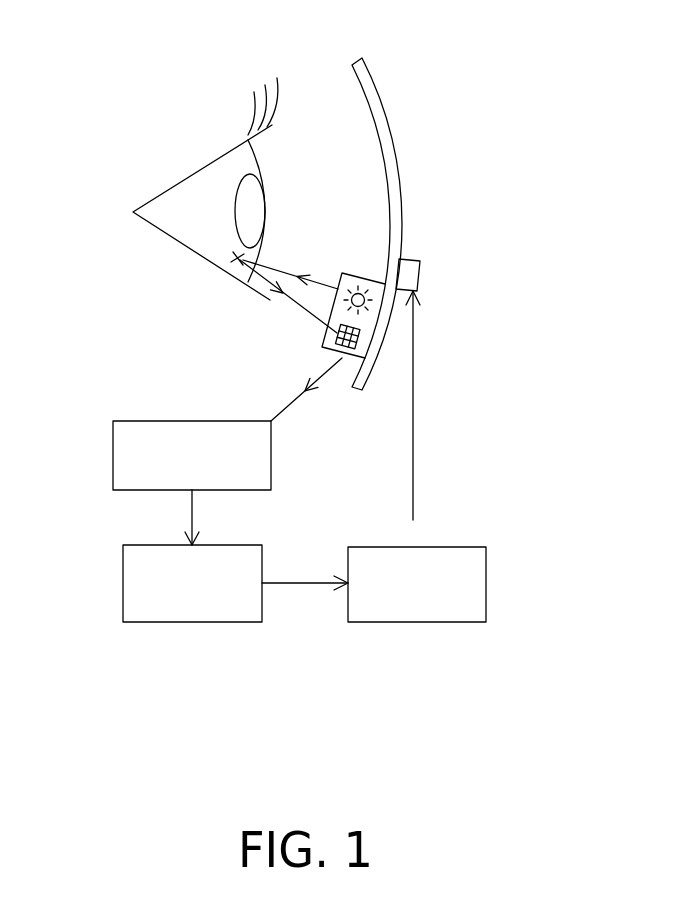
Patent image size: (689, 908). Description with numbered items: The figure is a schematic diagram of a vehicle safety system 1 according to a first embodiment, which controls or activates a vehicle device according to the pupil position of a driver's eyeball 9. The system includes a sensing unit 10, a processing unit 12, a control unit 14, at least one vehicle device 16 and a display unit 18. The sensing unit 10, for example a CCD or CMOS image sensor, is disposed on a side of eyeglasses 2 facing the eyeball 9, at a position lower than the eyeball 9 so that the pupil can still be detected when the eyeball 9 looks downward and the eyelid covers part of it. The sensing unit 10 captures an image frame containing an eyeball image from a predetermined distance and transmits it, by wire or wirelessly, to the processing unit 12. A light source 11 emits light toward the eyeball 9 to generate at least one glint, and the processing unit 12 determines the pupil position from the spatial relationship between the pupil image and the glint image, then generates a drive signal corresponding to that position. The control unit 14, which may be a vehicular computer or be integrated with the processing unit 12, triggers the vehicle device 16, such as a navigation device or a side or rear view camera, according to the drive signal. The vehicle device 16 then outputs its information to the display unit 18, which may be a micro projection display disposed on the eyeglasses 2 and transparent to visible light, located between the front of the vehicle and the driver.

The vehicle safety system 1 is at (528, 362).
The eyeglasses 2 is at (370, 92).
The eyeball 9 is at (220, 172).
The sensing unit 10 is at (337, 333).
The light source 11 is at (359, 292).
The processing unit 12 is at (132, 421).
The control unit 14 is at (123, 585).
The vehicle device 16 is at (470, 547).
The display unit 18 is at (422, 268).